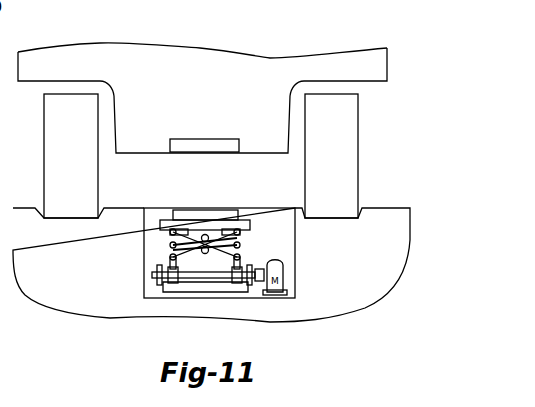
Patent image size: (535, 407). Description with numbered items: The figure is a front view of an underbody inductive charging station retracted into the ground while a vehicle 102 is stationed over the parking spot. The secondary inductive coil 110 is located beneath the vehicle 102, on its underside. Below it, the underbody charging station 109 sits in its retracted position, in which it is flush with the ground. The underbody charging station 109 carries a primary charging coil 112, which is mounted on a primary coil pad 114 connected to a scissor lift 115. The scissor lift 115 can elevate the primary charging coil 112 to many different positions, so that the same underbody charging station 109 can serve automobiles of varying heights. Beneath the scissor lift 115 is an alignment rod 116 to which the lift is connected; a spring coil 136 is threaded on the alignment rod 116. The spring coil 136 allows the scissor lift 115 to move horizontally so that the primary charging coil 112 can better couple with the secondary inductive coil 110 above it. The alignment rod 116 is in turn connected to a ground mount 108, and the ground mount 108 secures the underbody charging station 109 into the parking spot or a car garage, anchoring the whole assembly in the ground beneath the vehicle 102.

The vehicle 102 is at (322, 72).
The ground mount 108 is at (177, 298).
The underbody charging station 109 is at (268, 235).
The secondary inductive coil 110 is at (199, 138).
The primary charging coil 112 is at (203, 211).
The primary coil pad 114 is at (160, 225).
The scissor lift 115 is at (168, 244).
The alignment rod 116 is at (205, 283).
The spring coil 136 is at (226, 282).